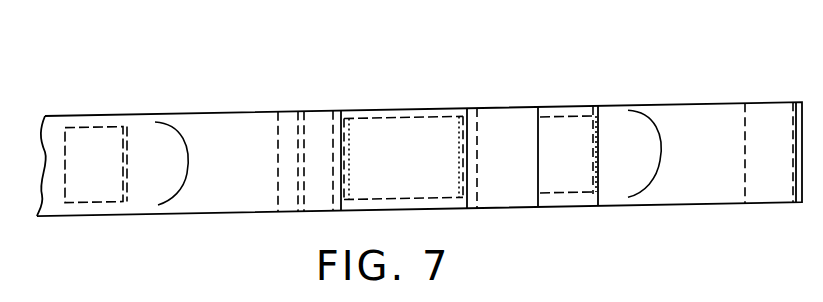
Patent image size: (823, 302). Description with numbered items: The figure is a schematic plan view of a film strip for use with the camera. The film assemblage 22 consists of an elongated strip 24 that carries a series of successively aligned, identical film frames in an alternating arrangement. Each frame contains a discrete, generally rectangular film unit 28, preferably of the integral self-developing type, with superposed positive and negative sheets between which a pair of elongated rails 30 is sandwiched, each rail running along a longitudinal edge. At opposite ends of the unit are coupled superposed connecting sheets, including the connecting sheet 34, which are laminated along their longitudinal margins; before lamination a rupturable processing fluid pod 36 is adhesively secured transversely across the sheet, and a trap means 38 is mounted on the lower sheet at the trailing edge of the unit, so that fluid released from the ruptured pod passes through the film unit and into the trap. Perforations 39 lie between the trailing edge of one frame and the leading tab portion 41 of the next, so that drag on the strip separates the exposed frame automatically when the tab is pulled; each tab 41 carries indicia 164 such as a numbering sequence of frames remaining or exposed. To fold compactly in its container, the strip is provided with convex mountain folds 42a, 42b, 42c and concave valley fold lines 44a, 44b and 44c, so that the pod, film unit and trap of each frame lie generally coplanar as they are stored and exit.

The film assemblage 22 is at (143, 58).
The elongated strip 24 is at (57, 118).
The film unit 28 is at (382, 172).
The elongated rail 30 is at (418, 110).
The connecting sheet 34 is at (82, 208).
The rupturable processing fluid pod 36 is at (98, 128).
The trap means 38 is at (284, 171).
The perforations 39 is at (182, 135).
The leading tab portion 41 is at (613, 123).
The mountain folded portion 42a is at (306, 117).
The mountain folded portion 42b is at (474, 105).
The perforation line 42c is at (597, 108).
The valley fold line 44a is at (277, 112).
The valley fold line 44b is at (330, 104).
The valley fold line 44c is at (792, 106).
The indicia 164 is at (166, 158).